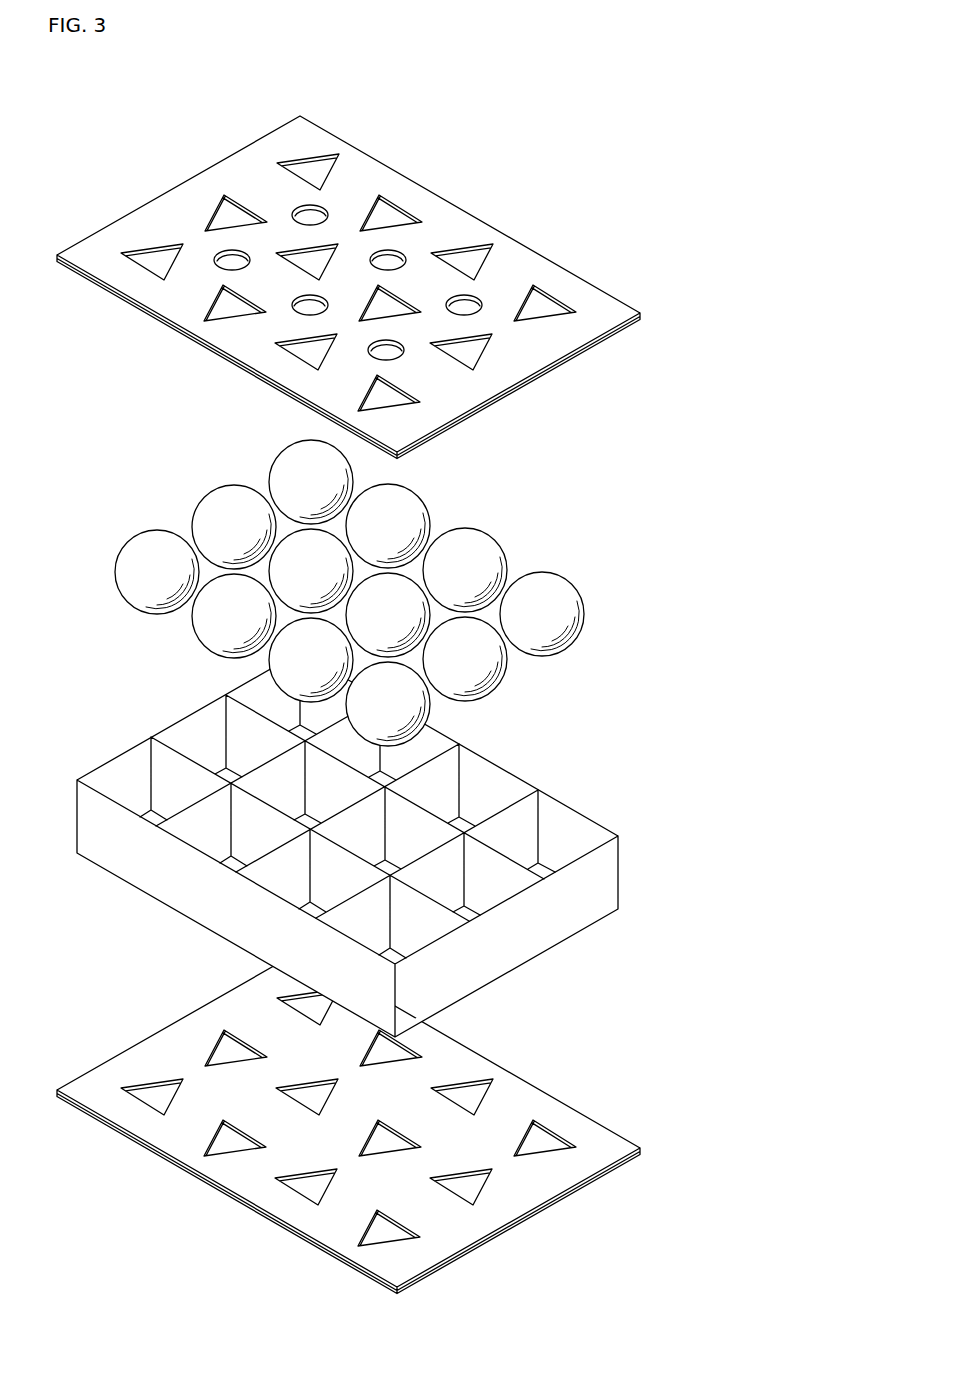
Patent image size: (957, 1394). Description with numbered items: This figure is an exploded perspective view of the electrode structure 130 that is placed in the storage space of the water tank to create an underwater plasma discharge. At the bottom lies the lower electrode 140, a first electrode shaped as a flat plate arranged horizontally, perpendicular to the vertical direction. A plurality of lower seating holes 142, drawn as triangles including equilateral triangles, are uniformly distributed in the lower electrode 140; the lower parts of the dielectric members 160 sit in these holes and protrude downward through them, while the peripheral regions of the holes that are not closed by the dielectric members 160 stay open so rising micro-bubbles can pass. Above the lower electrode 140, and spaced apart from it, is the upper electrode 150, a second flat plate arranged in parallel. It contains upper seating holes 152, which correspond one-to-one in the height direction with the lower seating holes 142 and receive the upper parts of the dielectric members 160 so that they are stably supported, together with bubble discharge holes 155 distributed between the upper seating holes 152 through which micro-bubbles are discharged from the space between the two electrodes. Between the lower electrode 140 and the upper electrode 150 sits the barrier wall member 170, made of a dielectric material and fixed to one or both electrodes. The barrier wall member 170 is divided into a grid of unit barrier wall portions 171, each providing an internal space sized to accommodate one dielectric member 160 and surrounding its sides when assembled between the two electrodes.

The electrode structure 130 is at (550, 140).
The lower electrode 140 is at (364, 1122).
The lower seating holes 142 is at (228, 1140).
The upper electrode 150 is at (357, 287).
The upper seating holes 152 is at (155, 260).
The bubble discharge holes 155 is at (390, 260).
The dielectric members 160 is at (556, 590).
The barrier wall member 170 is at (356, 844).
The unit barrier wall portions 171 is at (206, 742).